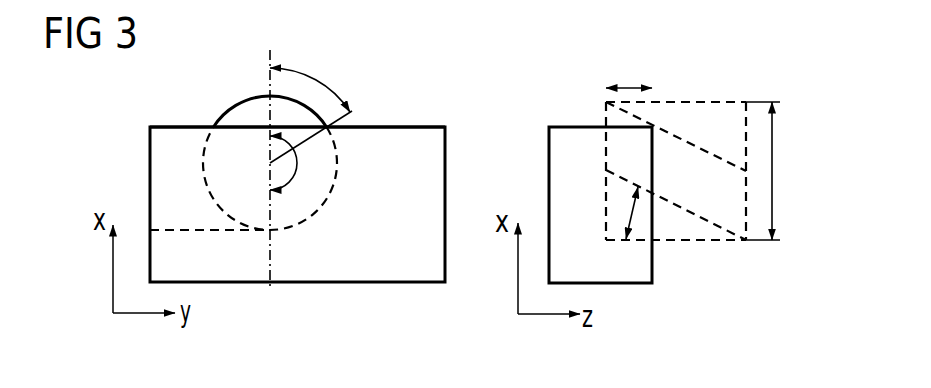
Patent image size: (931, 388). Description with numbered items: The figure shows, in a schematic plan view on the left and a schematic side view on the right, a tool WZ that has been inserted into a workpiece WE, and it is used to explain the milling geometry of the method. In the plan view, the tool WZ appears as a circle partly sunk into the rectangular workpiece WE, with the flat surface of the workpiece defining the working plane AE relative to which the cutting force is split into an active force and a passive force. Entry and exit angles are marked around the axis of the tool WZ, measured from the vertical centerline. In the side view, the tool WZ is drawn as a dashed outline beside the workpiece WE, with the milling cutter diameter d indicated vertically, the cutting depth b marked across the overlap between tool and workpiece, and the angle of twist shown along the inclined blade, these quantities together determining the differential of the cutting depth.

The workpiece WE is at (347, 270).
The tool WZ is at (244, 110).
The working plane AE is at (165, 180).
The cutting depth b is at (629, 86).
The milling cutter diameter d is at (773, 180).